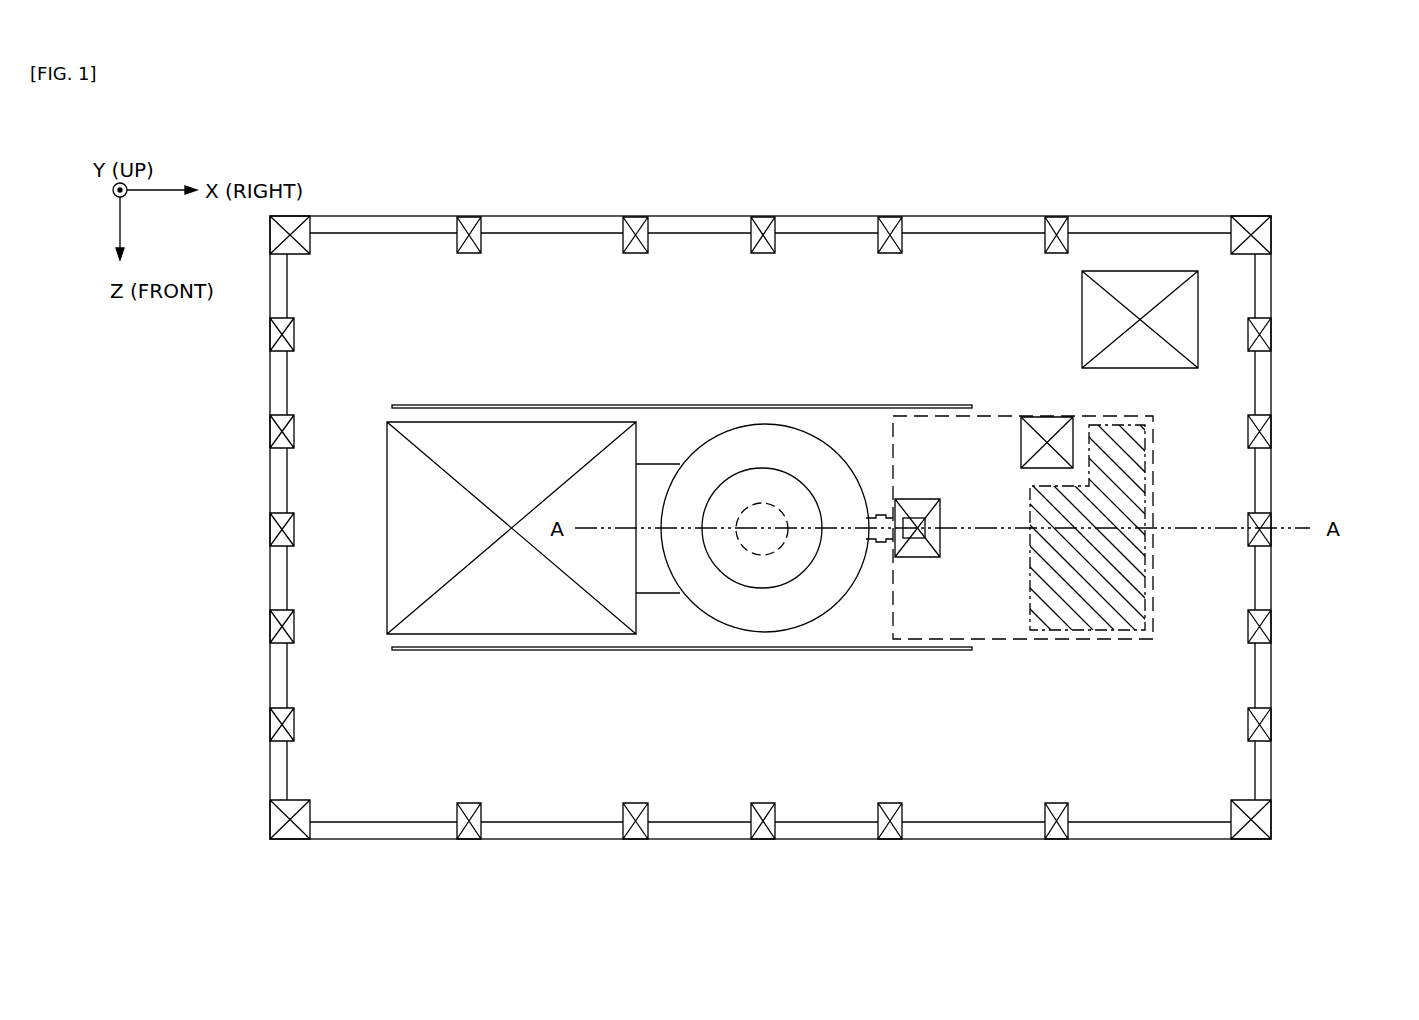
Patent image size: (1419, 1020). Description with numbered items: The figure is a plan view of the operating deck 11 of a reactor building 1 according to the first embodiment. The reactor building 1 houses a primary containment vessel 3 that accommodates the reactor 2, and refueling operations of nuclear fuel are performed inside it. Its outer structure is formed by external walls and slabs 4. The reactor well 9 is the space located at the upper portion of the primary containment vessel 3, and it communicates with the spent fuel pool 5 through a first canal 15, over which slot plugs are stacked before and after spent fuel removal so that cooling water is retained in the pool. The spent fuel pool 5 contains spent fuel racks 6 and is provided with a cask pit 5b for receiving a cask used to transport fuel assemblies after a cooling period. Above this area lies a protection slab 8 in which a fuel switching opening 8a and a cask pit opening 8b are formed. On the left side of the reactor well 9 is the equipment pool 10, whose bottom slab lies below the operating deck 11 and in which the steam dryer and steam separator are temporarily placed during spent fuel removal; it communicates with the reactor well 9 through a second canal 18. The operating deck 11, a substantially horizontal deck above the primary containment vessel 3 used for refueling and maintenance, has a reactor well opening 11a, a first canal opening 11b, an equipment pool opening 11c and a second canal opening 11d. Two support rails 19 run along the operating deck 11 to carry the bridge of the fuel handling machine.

The reactor building 1 is at (1150, 168).
The reactor 2 is at (757, 502).
The primary containment vessel 3 is at (708, 503).
The external walls and slabs 4 is at (1272, 383).
The spent fuel pool 5 is at (970, 638).
The cask pit 5b is at (1049, 423).
The spent fuel racks 6 is at (1153, 588).
The protection slab 8 is at (935, 453).
The fuel switching opening 8a is at (909, 553).
The cask pit opening 8b is at (1030, 422).
The reactor well 9 is at (788, 607).
The equipment pool 10 is at (548, 465).
The operating deck 11 is at (836, 348).
The reactor well opening 11a is at (710, 612).
The first canal opening 11b is at (871, 521).
The equipment pool opening 11c is at (566, 632).
The second canal opening 11d is at (665, 468).
The first canal 15 is at (877, 537).
The second canal 18 is at (651, 550).
The support rails 19 is at (417, 403).